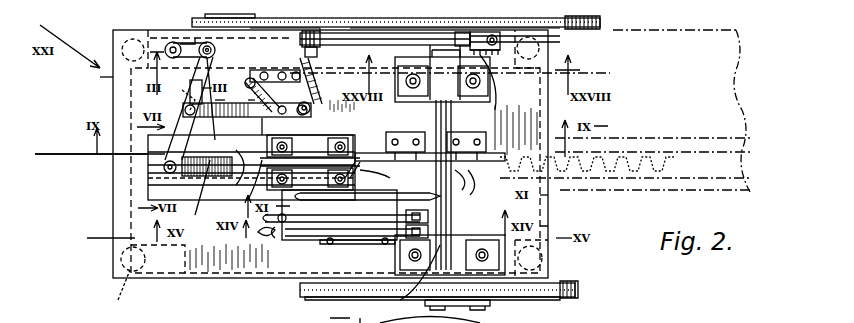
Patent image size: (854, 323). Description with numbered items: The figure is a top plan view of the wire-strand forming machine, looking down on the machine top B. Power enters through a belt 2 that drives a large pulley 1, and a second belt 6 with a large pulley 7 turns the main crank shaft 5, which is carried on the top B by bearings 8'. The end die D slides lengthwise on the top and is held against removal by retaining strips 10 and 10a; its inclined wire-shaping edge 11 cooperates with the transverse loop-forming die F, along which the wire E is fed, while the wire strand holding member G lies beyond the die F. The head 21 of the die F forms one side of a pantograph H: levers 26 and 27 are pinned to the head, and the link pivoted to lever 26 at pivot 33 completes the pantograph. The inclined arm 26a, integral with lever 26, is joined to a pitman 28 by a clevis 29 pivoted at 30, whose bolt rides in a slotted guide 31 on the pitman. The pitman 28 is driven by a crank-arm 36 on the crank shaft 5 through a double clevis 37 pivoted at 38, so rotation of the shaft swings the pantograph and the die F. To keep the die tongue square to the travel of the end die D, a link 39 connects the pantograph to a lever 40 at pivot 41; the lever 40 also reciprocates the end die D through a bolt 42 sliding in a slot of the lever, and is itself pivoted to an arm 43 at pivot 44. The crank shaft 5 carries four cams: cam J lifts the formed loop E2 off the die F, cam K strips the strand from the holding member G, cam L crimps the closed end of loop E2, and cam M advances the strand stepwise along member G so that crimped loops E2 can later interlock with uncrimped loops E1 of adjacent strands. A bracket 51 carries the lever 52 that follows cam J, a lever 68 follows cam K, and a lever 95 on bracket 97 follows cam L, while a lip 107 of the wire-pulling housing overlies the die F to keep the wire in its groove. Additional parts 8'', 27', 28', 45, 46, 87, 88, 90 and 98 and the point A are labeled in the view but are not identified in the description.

The large pulley 1 is at (592, 29).
The belt 2 is at (602, 18).
The main crank shaft 5 is at (435, 114).
The belt 6 is at (580, 290).
The large pulley 7 is at (575, 298).
The bearings 8' is at (496, 128).
The lower bracket 8'' is at (457, 274).
The retaining strip 10 is at (150, 140).
The retaining strip 10a is at (150, 180).
The inclined wire-shaping edge 11 is at (247, 119).
The head portion 21 is at (242, 100).
The lever 26 is at (252, 78).
The arm 26a is at (320, 81).
The lever 27 is at (215, 89).
The mounting block 27' is at (310, 139).
The pitman 28 is at (310, 155).
The rod 28' is at (482, 47).
The clevis 29 is at (318, 52).
The pivot 30 is at (312, 52).
The slotted guide 31 is at (370, 43).
The pivot 33 is at (308, 98).
The crank-arm 36 is at (500, 82).
The double clevis 37 is at (480, 57).
The pivot 38 is at (519, 43).
The link 39 is at (215, 100).
The lever 40 is at (178, 100).
The pivot 41 is at (205, 99).
The bolt 42 is at (160, 164).
The arm 43 is at (198, 45).
The pivot 44 is at (217, 50).
The roller 45 is at (170, 44).
The stud 46 is at (190, 52).
The bracket 51 is at (370, 233).
The lever 52 is at (318, 238).
The lever 68 is at (400, 238).
The lever 87 is at (483, 184).
The link 88 is at (360, 155).
The bearing pad 90 is at (395, 132).
The lever 95 is at (372, 195).
The bracket 97 is at (345, 230).
The eye 98 is at (265, 238).
The lip 107 is at (233, 186).
The corner post A is at (118, 292).
The top B is at (99, 78).
The end die D is at (199, 187).
The wire E is at (91, 145).
The looped end E1 is at (648, 152).
The looped end E2 is at (638, 180).
The loop-forming die F is at (262, 124).
The wire strand holding member G is at (371, 165).
The pantograph H is at (338, 106).
The cam J is at (419, 280).
The cam K is at (430, 201).
The cam L is at (425, 193).
The cam M is at (467, 181).